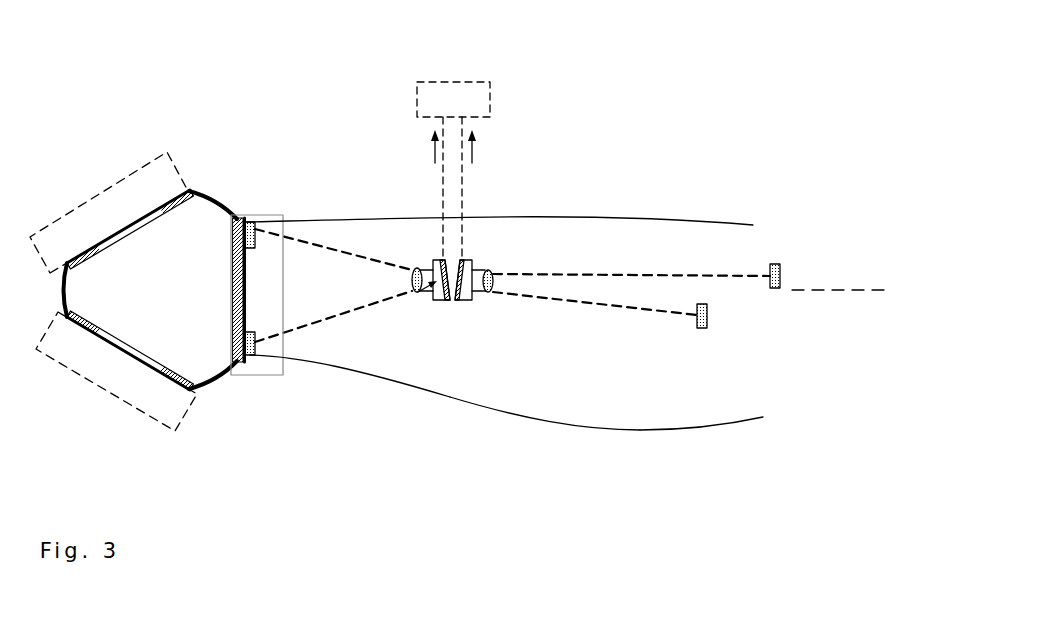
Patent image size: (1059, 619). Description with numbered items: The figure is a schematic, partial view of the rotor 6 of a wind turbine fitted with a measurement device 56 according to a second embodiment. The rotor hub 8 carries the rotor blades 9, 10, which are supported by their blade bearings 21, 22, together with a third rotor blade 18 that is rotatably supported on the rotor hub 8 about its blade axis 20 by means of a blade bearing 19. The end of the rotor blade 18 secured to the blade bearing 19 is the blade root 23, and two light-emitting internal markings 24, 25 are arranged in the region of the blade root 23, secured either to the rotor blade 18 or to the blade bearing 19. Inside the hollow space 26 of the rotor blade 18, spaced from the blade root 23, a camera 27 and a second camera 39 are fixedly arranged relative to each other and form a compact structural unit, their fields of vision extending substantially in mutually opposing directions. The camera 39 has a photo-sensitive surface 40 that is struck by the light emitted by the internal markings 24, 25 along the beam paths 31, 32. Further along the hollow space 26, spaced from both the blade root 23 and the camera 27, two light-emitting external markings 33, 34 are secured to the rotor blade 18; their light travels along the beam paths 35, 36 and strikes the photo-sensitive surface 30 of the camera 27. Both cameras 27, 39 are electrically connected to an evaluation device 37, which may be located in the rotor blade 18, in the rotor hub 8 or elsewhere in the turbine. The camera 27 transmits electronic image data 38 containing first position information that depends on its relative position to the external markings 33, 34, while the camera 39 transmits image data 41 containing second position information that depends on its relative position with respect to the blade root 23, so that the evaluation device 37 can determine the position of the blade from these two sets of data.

The rotor 6 is at (213, 386).
The rotor hub 8 is at (211, 195).
The rotor blade 9 is at (60, 217).
The rotor blade 10 is at (75, 378).
The third rotor blade 18 is at (663, 431).
The blade bearing 19 is at (232, 258).
The blade axis 20 is at (845, 291).
The blade bearing 21 is at (150, 214).
The blade bearing 22 is at (156, 371).
The blade root 23 is at (264, 362).
The internal marking 24 is at (250, 220).
The internal marking 25 is at (250, 357).
The hollow space 26 is at (582, 405).
The camera 27 is at (470, 262).
The photo-sensitive surface 30 is at (458, 303).
The beam path 31 is at (329, 222).
The beam path 32 is at (336, 336).
The external marking 33 is at (777, 263).
The external marking 34 is at (702, 329).
The beam path 35 is at (703, 275).
The beam path 36 is at (647, 315).
The evaluation device 37 is at (492, 93).
The image data 38 is at (475, 149).
The camera 39 is at (434, 263).
The photo-sensitive surface 40 is at (443, 301).
The image data 41 is at (432, 149).
The measurement device 56 is at (341, 124).